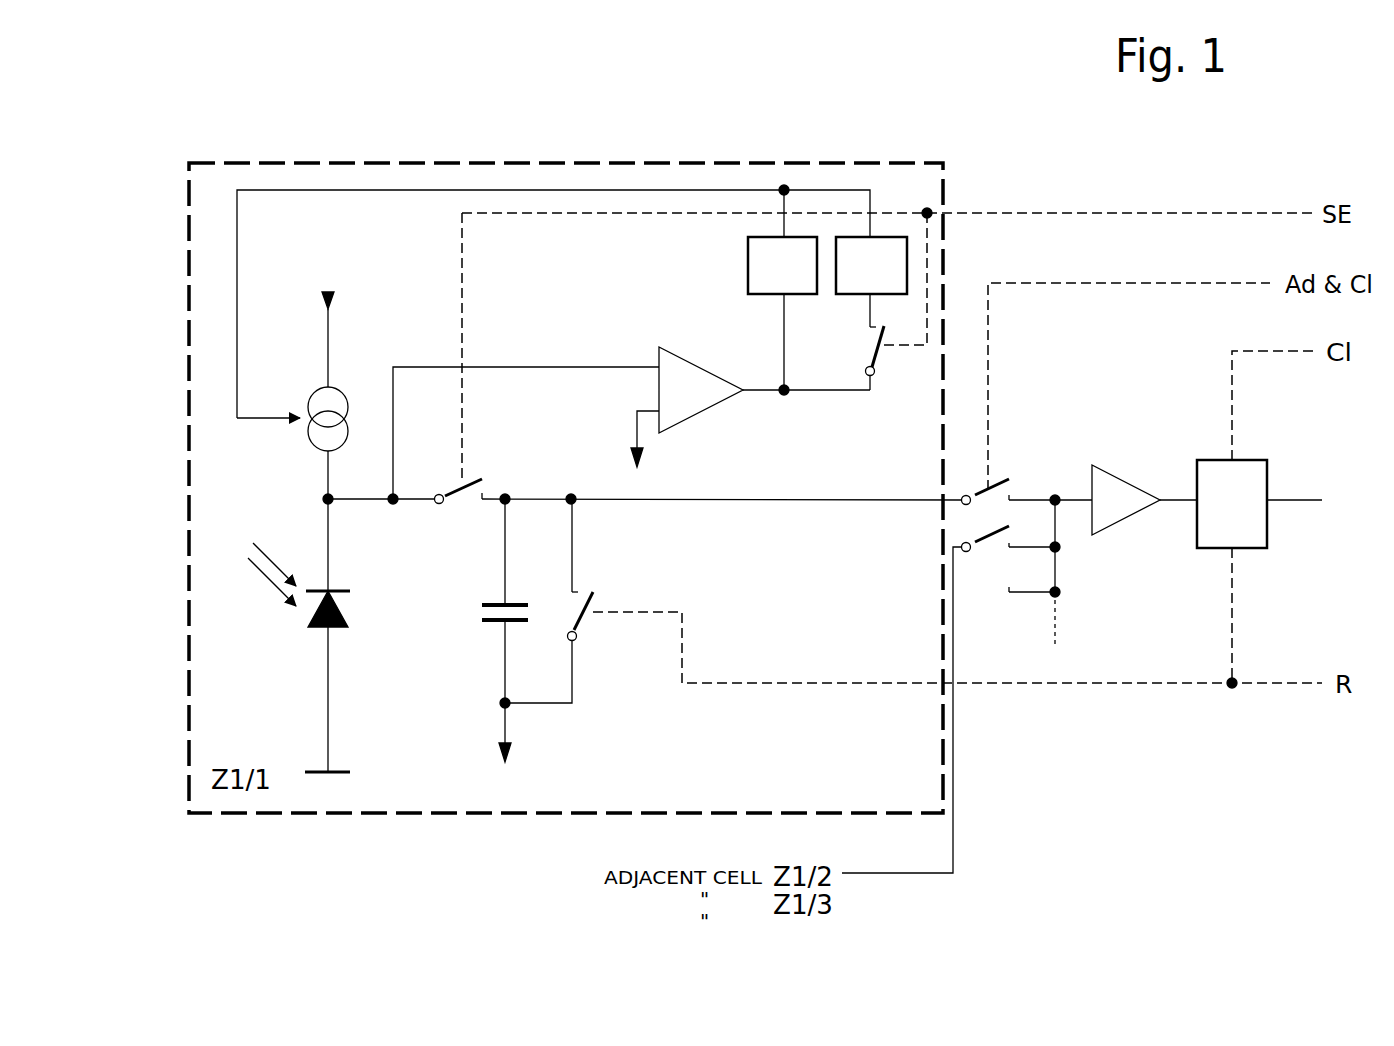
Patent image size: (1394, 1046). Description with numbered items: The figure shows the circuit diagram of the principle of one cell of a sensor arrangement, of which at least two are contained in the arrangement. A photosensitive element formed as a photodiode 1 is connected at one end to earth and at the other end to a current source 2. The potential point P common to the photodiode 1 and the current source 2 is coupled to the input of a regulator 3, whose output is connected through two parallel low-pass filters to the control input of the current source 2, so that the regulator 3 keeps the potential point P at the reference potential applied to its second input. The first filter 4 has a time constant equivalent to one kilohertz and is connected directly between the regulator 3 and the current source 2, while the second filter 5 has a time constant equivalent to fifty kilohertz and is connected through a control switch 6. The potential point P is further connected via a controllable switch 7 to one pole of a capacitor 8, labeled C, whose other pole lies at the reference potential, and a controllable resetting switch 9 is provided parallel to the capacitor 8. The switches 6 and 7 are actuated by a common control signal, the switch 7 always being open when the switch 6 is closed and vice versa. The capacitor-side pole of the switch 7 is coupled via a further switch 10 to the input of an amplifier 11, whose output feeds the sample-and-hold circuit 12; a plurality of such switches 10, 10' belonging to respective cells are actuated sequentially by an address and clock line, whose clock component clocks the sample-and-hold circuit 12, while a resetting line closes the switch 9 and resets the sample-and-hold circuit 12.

The photodiode 1 is at (310, 611).
The current source 2 is at (306, 406).
The regulator 3 is at (688, 356).
The first filter 4 is at (748, 263).
The second filter 5 is at (892, 237).
The control switch 6 is at (880, 355).
The controllable switch 7 is at (478, 480).
The capacitor 8 is at (494, 642).
The resetting switch 9 is at (580, 622).
The switch 10 is at (1027, 452).
The switch 10' is at (951, 699).
The amplifier 11 is at (1116, 482).
The sample-and-hold circuit 12 is at (1210, 537).
The potential point P is at (328, 499).
The capacitor C is at (500, 594).